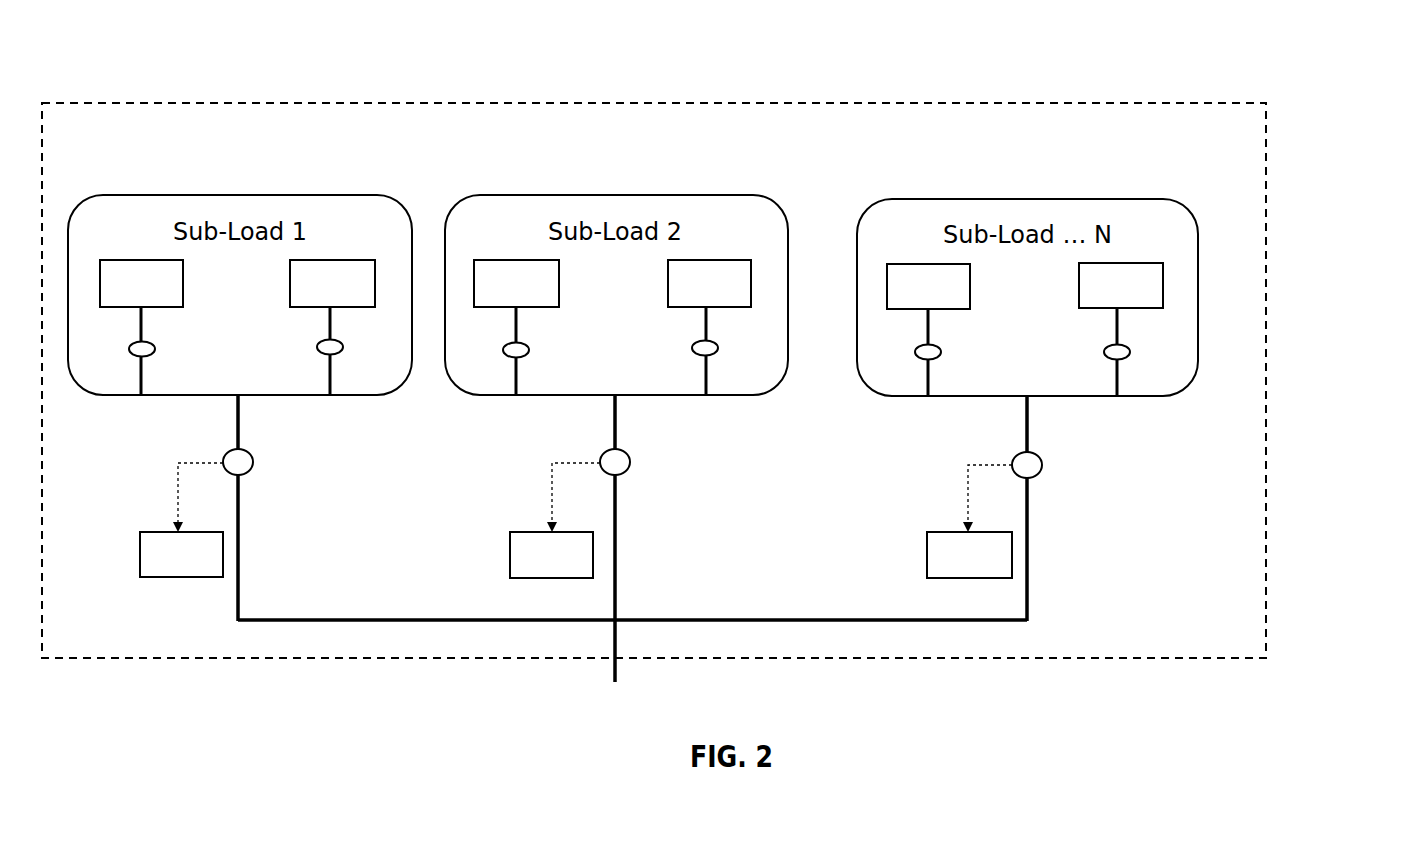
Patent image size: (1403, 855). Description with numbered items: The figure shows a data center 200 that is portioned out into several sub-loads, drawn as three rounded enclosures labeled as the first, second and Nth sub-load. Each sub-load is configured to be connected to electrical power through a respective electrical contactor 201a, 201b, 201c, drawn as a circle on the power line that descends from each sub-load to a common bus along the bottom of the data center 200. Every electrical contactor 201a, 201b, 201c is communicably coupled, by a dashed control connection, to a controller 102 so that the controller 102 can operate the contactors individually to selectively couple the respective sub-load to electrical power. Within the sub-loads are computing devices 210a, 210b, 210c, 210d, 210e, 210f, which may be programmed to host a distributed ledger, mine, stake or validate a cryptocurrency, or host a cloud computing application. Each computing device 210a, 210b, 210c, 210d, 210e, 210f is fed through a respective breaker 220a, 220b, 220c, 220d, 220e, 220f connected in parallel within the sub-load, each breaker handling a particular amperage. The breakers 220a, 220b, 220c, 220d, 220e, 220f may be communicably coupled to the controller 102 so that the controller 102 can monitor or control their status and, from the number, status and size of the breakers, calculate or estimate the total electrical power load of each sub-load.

The data center 200 is at (1328, 110).
The computing device 210a is at (114, 296).
The computing device 210b is at (305, 296).
The computing device 210c is at (489, 296).
The computing device 210d is at (682, 296).
The computing device 210e is at (901, 299).
The computing device 210f is at (1096, 298).
The breaker 220a is at (155, 348).
The breaker 220b is at (318, 347).
The breaker 220c is at (529, 349).
The breaker 220d is at (693, 348).
The breaker 220e is at (941, 350).
The breaker 220f is at (1105, 352).
The electrical contactor 201a is at (254, 459).
The electrical contactor 201b is at (631, 459).
The electrical contactor 201c is at (1043, 462).
The controller 102 is at (162, 567).